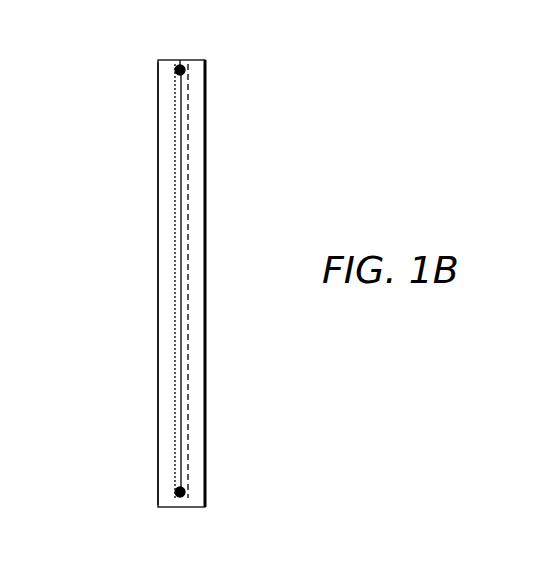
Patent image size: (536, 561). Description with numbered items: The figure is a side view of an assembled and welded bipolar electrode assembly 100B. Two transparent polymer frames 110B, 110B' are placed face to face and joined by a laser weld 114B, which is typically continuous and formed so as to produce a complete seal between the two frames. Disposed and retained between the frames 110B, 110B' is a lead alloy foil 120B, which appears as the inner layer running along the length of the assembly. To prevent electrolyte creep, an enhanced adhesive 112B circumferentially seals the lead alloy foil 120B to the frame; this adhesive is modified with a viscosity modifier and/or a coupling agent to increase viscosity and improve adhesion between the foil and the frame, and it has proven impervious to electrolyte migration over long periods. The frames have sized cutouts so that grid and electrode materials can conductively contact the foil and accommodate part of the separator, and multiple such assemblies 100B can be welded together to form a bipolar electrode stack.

The bipolar electrode assembly 100B is at (275, 195).
The transparent polymer frame 110B is at (232, 283).
The transparent polymer frame 110B' is at (113, 283).
The enhanced adhesive 112B is at (180, 70).
The laser weld 114B is at (180, 66).
The lead alloy foil 120B is at (181, 238).